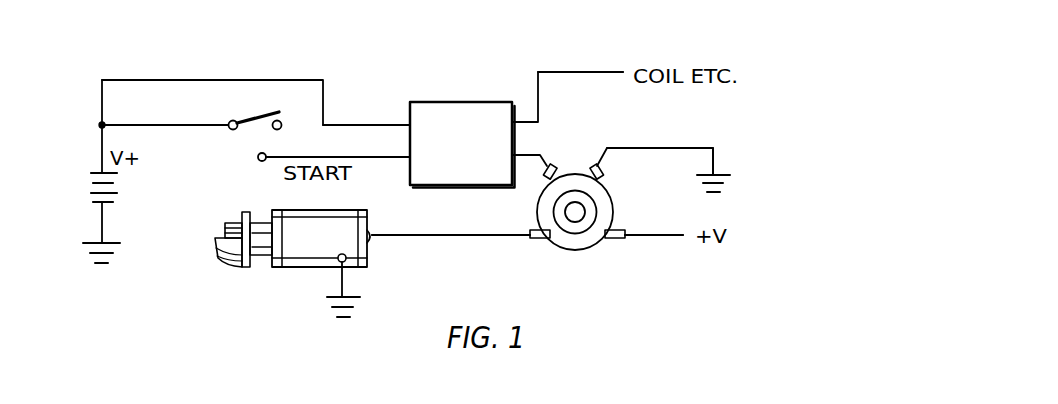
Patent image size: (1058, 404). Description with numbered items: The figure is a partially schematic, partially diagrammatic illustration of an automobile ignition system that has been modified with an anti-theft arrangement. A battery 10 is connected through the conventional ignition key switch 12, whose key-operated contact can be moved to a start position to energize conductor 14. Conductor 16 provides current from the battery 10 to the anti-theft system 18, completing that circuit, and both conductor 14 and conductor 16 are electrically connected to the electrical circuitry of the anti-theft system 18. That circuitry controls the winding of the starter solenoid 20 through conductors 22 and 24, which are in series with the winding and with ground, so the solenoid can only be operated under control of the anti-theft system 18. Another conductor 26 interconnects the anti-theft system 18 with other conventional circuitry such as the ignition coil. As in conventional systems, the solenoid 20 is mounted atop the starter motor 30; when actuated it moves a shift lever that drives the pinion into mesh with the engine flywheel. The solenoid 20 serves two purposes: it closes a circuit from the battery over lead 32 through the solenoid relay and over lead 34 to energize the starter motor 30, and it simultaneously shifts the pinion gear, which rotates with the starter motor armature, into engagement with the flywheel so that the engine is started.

The battery 10 is at (93, 160).
The ignition key switch 12 is at (227, 115).
The conductor 14 is at (380, 158).
The conductor 16 is at (367, 125).
The anti-theft system 18 is at (457, 102).
The starter solenoid 20 is at (578, 172).
The conductor 22 is at (548, 165).
The conductor 24 is at (674, 148).
The conductor 26 is at (585, 72).
The starter motor 30 is at (303, 269).
The lead 32 is at (648, 237).
The lead 34 is at (440, 237).